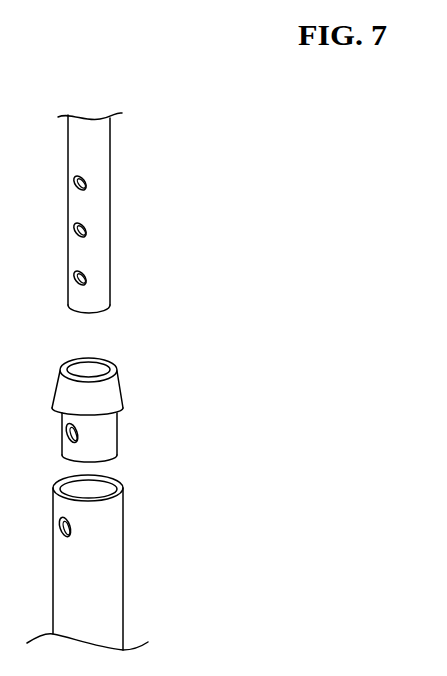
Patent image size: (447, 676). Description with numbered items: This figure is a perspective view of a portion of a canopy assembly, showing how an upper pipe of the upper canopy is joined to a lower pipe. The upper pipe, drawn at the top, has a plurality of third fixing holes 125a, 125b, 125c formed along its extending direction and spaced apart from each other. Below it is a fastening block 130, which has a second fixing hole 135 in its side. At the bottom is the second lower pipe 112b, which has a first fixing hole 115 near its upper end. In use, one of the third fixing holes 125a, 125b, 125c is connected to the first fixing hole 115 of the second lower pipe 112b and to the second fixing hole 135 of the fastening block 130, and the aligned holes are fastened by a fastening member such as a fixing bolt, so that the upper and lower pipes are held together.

The third fixing hole 125a is at (86, 276).
The third fixing hole 125b is at (86, 228).
The third fixing hole 125c is at (86, 180).
The fastening block 130 is at (138, 410).
The second fixing hole 135 is at (80, 429).
The first fixing hole 115 is at (72, 525).
The second lower pipe 112b is at (130, 562).